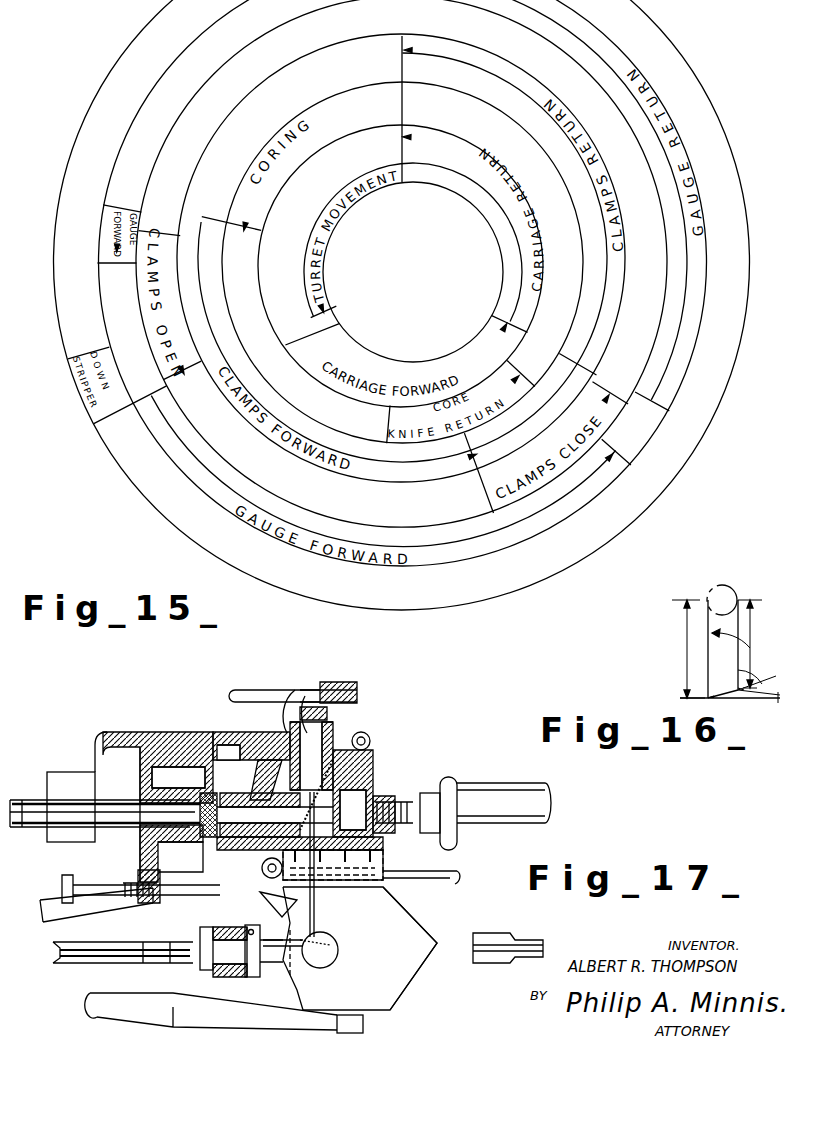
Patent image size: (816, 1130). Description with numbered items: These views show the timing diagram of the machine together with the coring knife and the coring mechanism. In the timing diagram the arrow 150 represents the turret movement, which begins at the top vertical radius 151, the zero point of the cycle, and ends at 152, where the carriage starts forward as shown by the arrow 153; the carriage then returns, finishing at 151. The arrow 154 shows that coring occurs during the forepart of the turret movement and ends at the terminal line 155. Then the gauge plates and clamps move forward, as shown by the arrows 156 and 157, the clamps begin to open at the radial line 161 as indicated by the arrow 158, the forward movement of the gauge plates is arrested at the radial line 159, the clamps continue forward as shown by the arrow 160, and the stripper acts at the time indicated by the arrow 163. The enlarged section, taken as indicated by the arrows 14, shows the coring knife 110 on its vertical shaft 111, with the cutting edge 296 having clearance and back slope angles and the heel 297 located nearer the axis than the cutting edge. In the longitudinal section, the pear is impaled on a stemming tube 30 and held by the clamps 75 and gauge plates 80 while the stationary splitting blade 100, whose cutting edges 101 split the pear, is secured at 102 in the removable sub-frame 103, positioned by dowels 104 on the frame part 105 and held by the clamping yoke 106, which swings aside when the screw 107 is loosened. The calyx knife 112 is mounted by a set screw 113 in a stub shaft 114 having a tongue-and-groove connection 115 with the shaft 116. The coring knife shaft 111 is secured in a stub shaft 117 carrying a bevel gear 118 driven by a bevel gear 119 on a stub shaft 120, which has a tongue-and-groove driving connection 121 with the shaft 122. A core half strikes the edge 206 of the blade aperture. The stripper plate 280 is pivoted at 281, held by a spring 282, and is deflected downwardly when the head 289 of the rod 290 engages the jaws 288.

In FIG. 15, the arrow 150 is at (369, 186).
In FIG. 15, the top vertical radius 151 is at (403, 176).
In FIG. 15, the end of turret movement 152 is at (324, 303).
In FIG. 15, the arrow 153 is at (340, 353).
In FIG. 15, the arrow 154 is at (327, 118).
In FIG. 15, the terminal line 155 is at (252, 236).
In FIG. 15, the arrow 156 is at (200, 290).
In FIG. 15, the arrow 157 is at (135, 197).
In FIG. 15, the arrow 158 is at (160, 312).
In FIG. 15, the radial line 159 is at (130, 268).
In FIG. 15, the arrow 160 is at (270, 418).
In FIG. 15, the radial line 161 is at (179, 233).
In FIG. 15, the arrow 163 is at (97, 421).
In FIG. 16, the coring knife 110 is at (738, 657).
In FIG. 17, the coring knife 110 is at (323, 940).
In FIG. 16, the vertical shaft 111 is at (723, 598).
In FIG. 17, the vertical shaft 111 is at (315, 913).
In FIG. 16, the cutting edge 296 is at (708, 698).
In FIG. 16, the heel 297 is at (738, 688).
In FIG. 17, the frame part 105 is at (162, 732).
In FIG. 17, the dowels 104 is at (228, 740).
In FIG. 17, the shaft 122 is at (91, 815).
In FIG. 17, the tongue-and-groove driving connection 121 is at (208, 790).
In FIG. 17, the rod 290 is at (271, 676).
In FIG. 17, the head 289 is at (322, 688).
In FIG. 17, the jaws 288 is at (291, 680).
In FIG. 17, the stub shaft 117 is at (315, 743).
In FIG. 17, the spring 282 is at (372, 750).
In FIG. 17, the sub-frame 103 is at (363, 768).
In FIG. 17, the bevel gear 118 is at (350, 778).
In FIG. 17, the bevel gear 119 is at (272, 770).
In FIG. 17, the stub shaft 120 is at (243, 803).
In FIG. 17, the pivot 281 is at (268, 870).
In FIG. 17, the securing point 102 is at (365, 864).
In FIG. 17, the clamping yoke 106 is at (425, 790).
In FIG. 17, the screw 107 is at (466, 785).
In FIG. 17, the stripper plate 280 is at (436, 878).
In FIG. 17, the shaft 116 is at (135, 958).
In FIG. 17, the tongue-and-groove connection 115 is at (200, 965).
In FIG. 17, the stub shaft 114 is at (230, 975).
In FIG. 17, the set screw 113 is at (245, 928).
In FIG. 17, the calyx knife 112 is at (272, 938).
In FIG. 17, the stemming tube 30 is at (498, 958).
In FIG. 17, the gauge plate 80 is at (290, 996).
In FIG. 17, the clamp 75 is at (352, 1025).
In FIG. 17, the splitting blade 100 is at (360, 948).
In FIG. 17, the cutting edges 101 is at (408, 925).
In FIG. 17, the edge 206 is at (338, 943).
In FIG. 17, the section arrows 14 is at (350, 940).